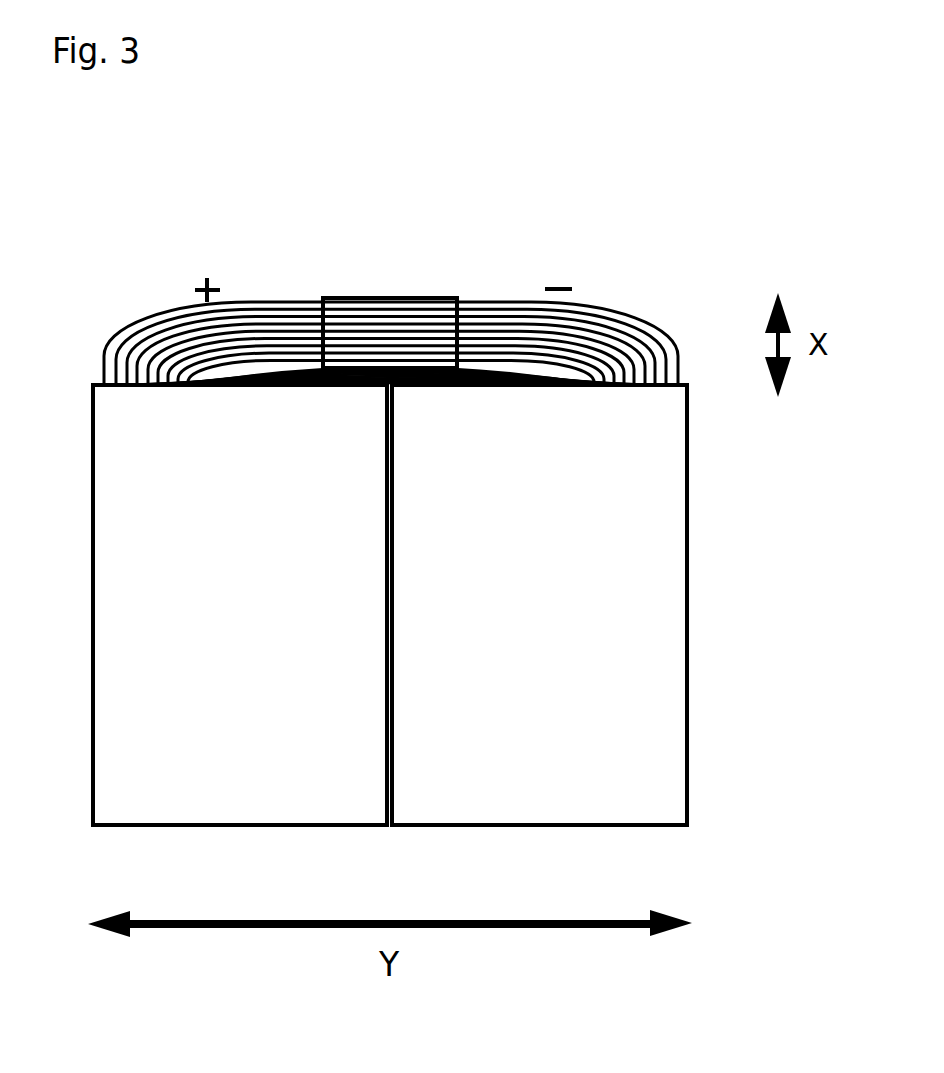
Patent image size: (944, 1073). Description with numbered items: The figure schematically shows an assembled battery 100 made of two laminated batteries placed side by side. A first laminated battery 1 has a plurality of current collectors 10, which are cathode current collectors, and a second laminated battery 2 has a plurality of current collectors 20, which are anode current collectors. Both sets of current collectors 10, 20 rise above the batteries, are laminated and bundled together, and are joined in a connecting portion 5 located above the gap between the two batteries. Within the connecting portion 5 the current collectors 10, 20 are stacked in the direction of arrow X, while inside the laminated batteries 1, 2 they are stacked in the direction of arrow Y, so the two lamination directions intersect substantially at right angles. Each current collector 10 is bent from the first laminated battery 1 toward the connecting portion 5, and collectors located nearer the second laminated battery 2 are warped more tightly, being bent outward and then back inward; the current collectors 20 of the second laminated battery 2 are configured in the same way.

The assembled battery 100 is at (415, 168).
The first laminated battery 1 is at (103, 826).
The second laminated battery 2 is at (678, 826).
The connecting portion 5 is at (435, 297).
The current collectors 10 is at (108, 318).
The current collectors 20 is at (657, 318).